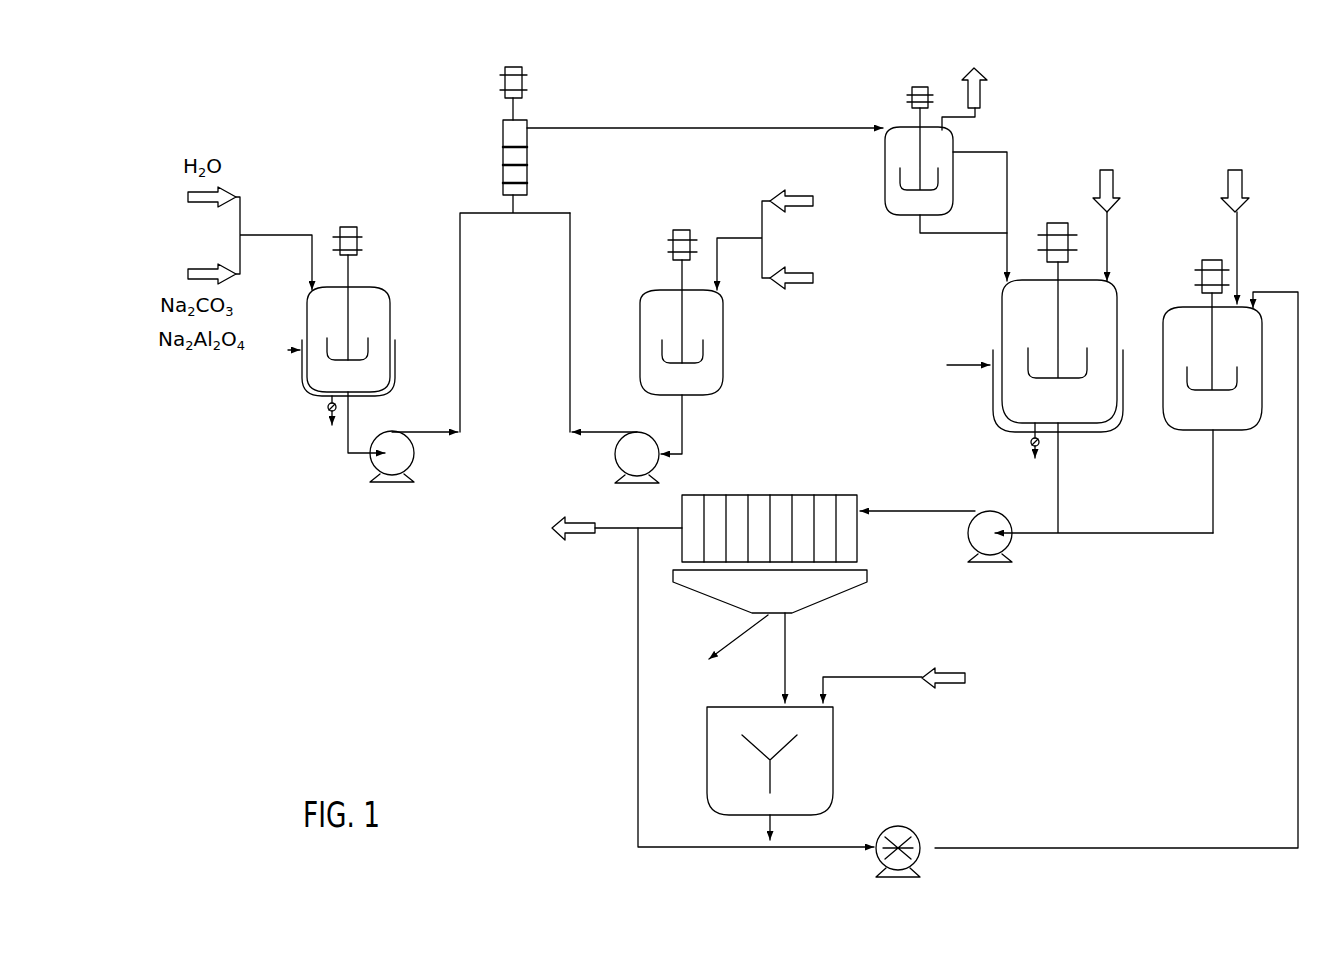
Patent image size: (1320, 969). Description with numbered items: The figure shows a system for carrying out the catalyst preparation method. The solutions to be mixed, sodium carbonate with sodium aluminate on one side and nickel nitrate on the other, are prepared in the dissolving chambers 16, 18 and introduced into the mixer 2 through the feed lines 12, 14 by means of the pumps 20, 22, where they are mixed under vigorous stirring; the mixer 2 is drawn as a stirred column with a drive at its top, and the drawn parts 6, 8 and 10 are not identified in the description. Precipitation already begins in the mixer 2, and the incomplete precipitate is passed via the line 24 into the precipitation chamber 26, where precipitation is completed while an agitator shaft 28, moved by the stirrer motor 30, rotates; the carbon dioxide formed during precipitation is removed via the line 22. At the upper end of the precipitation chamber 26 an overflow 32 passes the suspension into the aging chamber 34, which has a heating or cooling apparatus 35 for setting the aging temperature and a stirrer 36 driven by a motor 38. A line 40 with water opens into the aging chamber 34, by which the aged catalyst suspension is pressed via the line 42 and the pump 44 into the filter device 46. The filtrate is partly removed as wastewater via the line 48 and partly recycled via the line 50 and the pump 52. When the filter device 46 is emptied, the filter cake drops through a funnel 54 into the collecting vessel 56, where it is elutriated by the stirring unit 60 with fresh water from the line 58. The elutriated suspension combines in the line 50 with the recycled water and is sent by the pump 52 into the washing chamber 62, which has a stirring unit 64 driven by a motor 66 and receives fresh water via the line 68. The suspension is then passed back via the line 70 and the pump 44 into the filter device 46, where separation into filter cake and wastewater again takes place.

The mixer 2 is at (528, 158).
The column inlet 6 is at (503, 130).
The column motor 8 is at (524, 78).
The column stage 10 is at (503, 183).
The feed line 12 is at (460, 258).
The feed line 14 is at (570, 270).
The dissolving chamber 16 is at (382, 322).
The dissolving chamber 18 is at (642, 328).
The pump 20 is at (412, 455).
The pump 22 is at (615, 455).
The line 24 is at (658, 132).
The precipitation chamber 26 is at (900, 126).
The agitator shaft 28 is at (917, 146).
The stirrer motor 30 is at (920, 87).
The overflow 32 is at (1008, 158).
The aging chamber 34 is at (1000, 312).
The heating or cooling apparatus 35 is at (960, 367).
The stirrer 36 is at (1055, 345).
The motor 38 is at (1053, 223).
The line 40 is at (1108, 225).
The line 42 is at (1058, 483).
The pump 44 is at (1012, 540).
The filter device 46 is at (777, 503).
The line 48 is at (580, 532).
The line 50 is at (637, 712).
The pump 52 is at (920, 830).
The funnel 54 is at (822, 600).
The collecting vessel 56 is at (835, 730).
The line 58 is at (888, 675).
The stirring unit 60 is at (780, 750).
The washing chamber 62 is at (1183, 428).
The stirring unit 64 is at (1210, 337).
The motor 66 is at (1210, 260).
The line 68 is at (1238, 230).
The line 70 is at (1158, 535).